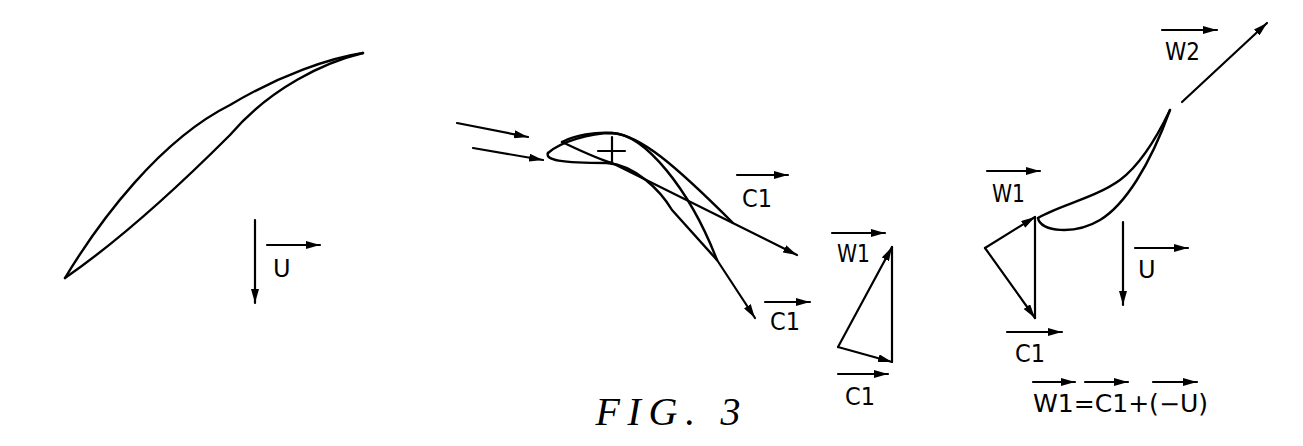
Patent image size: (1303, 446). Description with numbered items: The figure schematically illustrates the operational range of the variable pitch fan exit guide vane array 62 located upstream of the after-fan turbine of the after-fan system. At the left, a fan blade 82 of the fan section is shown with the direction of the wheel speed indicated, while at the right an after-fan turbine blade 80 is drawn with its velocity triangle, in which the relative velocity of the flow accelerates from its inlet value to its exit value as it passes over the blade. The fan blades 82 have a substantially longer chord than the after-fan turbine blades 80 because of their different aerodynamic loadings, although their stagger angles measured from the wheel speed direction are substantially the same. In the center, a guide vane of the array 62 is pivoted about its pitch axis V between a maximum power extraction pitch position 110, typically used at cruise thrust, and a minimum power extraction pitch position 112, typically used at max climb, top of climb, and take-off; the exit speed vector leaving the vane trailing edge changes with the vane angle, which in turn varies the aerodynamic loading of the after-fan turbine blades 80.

The fan blades 82 is at (220, 122).
The after-fan turbine blades 80 is at (1160, 143).
The variable pitch fan exit guide vane array 62 is at (620, 138).
The maximum power extraction pitch position 110 is at (697, 235).
The minimum power extraction pitch position 112 is at (693, 178).
The pitch axis V is at (610, 165).